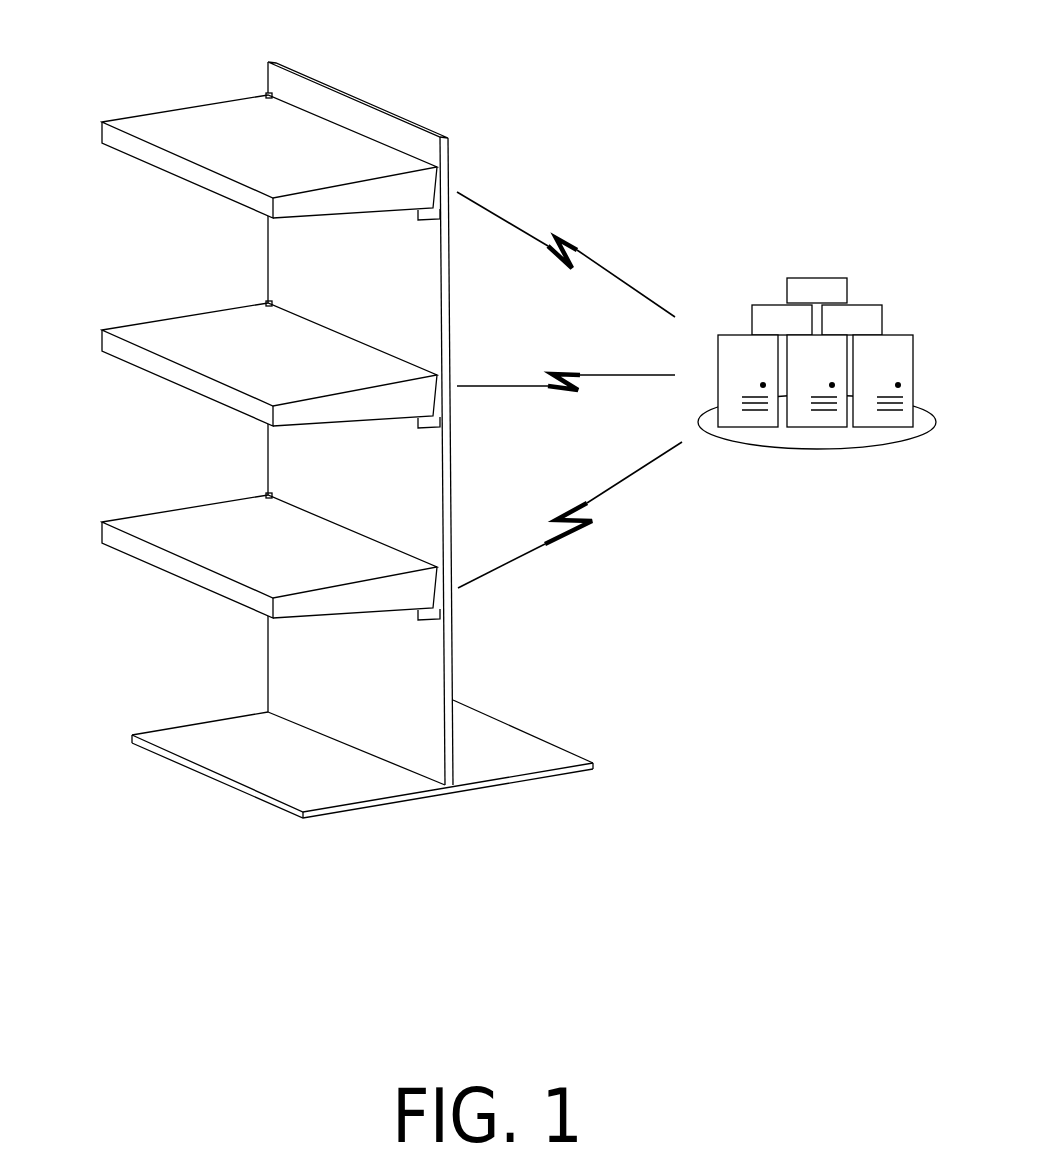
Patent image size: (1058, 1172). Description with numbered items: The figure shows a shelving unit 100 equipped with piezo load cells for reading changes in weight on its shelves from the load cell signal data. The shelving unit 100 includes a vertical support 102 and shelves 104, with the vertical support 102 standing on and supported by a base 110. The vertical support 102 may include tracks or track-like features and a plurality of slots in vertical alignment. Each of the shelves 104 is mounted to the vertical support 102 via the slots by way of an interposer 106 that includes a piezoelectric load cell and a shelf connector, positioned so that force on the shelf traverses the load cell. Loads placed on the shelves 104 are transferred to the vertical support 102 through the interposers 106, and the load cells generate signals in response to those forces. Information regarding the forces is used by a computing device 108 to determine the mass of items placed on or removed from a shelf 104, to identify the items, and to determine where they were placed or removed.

The shelving unit 100 is at (155, 57).
The vertical support 102 is at (357, 100).
The shelves 104 is at (132, 122).
The interposer 106 is at (265, 93).
The computing device 108 is at (817, 316).
The base 110 is at (523, 743).